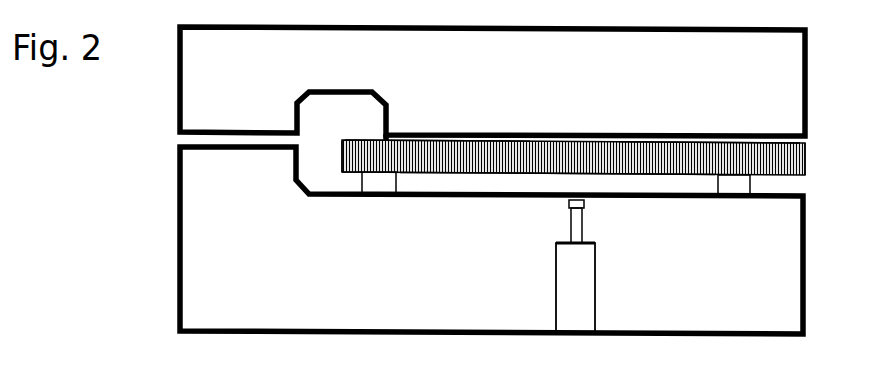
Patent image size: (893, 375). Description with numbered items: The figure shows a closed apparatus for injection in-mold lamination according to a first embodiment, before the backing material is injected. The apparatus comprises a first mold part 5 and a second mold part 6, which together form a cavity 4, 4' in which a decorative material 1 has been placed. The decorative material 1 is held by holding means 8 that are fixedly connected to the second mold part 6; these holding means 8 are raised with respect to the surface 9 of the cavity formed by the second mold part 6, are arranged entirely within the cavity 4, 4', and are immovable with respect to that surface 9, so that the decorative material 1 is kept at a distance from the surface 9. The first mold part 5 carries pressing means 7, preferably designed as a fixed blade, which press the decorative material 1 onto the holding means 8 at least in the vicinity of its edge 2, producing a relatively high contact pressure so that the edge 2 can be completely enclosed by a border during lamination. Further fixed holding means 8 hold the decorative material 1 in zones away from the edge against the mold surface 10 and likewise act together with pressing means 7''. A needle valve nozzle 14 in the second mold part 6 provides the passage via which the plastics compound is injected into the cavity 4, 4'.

The decorative material 1 is at (532, 162).
The edge 2 is at (342, 157).
The cavity 4 is at (557, 214).
The cavity 4' is at (337, 154).
The first mold part 5 is at (247, 97).
The second mold part 6 is at (246, 254).
The pressing means 7 is at (437, 105).
The pressing means 7'' is at (710, 106).
The holding means 8 is at (378, 182).
The surface 9 is at (773, 188).
The mold surface 10 is at (687, 140).
The needle valve nozzle 14 is at (562, 322).